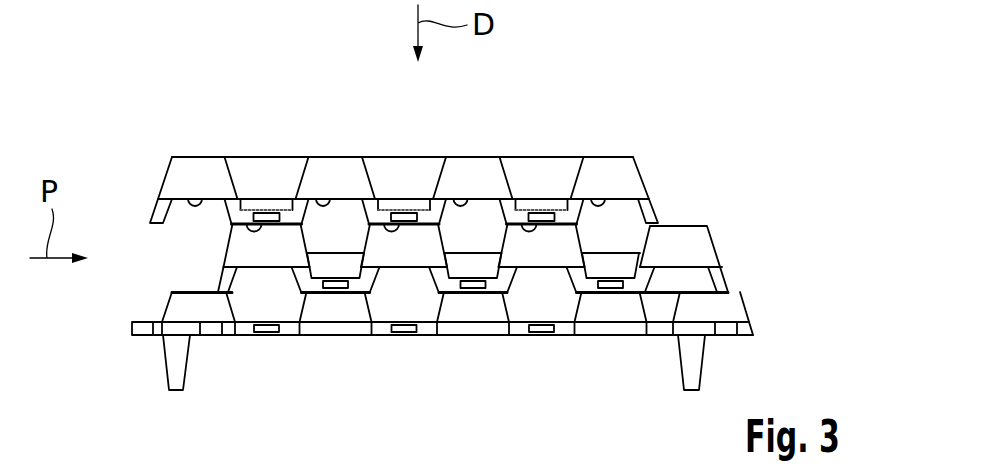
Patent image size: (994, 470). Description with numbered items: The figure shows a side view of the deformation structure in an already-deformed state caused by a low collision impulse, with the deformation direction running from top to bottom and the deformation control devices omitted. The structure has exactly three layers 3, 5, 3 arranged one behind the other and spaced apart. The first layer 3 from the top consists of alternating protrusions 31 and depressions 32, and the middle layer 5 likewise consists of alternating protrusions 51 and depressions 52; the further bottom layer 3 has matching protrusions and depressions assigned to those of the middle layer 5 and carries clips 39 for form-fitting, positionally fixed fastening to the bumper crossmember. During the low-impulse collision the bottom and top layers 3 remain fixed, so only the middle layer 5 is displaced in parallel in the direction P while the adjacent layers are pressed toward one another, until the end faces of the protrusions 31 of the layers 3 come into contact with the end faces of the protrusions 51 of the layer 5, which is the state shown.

The layer 3 is at (134, 175).
The layer 5 is at (742, 243).
The protrusion 31 is at (247, 226).
The depression 32 is at (190, 198).
The protrusion 51 is at (268, 212).
The depression 52 is at (343, 253).
The clip 39 is at (172, 360).